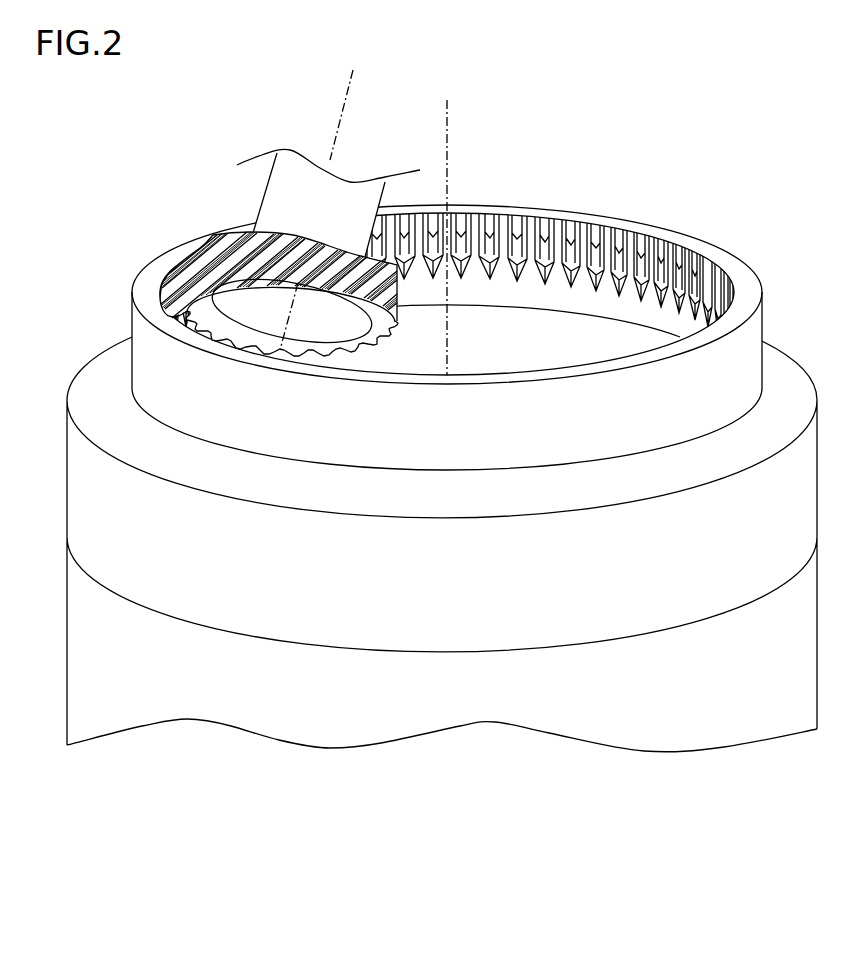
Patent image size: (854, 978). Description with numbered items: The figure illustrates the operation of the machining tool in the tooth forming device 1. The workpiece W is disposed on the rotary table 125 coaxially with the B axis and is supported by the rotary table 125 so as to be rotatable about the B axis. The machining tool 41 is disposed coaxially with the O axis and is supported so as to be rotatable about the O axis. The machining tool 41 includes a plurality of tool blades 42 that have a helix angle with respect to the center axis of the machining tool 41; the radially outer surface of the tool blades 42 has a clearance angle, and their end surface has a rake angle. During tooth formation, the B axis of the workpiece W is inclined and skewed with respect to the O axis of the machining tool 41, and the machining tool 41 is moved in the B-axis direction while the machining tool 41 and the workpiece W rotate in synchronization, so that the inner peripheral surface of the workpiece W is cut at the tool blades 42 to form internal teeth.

The tooth forming device 1 is at (727, 90).
The machining tool 41 is at (267, 207).
The tool blades 42 is at (207, 238).
The rotary table 125 is at (642, 715).
The workpiece W is at (742, 267).
The O axis O is at (352, 102).
The B axis B is at (448, 110).